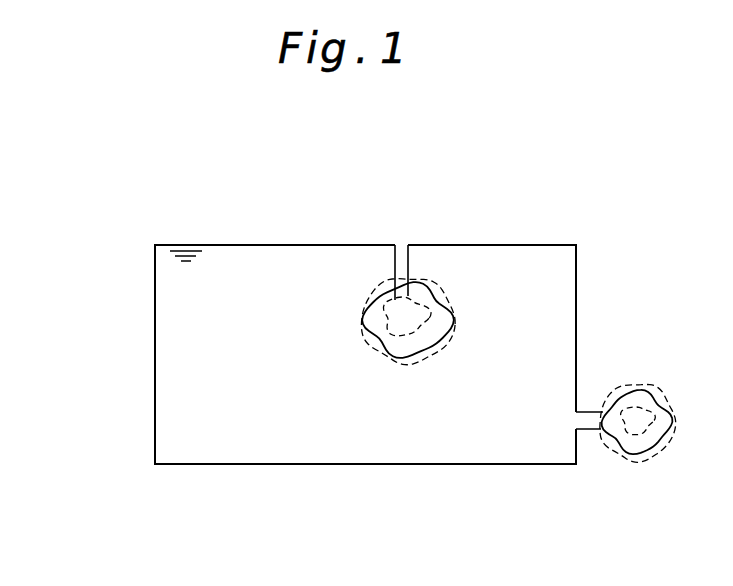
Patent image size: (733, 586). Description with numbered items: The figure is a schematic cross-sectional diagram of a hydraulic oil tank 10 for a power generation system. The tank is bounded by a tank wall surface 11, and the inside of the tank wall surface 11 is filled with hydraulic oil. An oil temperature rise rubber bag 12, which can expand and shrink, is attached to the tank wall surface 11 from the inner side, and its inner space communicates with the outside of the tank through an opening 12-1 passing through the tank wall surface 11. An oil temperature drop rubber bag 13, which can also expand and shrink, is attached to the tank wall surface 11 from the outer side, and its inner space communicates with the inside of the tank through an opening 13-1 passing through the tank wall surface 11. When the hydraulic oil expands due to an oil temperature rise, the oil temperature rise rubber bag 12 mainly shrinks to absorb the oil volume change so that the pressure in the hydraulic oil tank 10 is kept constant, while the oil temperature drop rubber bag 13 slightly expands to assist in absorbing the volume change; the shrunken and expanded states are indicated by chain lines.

The hydraulic oil tank 10 is at (122, 223).
The tank wall surface 11 is at (155, 447).
The oil temperature rise rubber bag 12 is at (432, 313).
The opening 12-1 is at (400, 243).
The oil temperature drop rubber bag 13 is at (639, 398).
The opening 13-1 is at (575, 420).